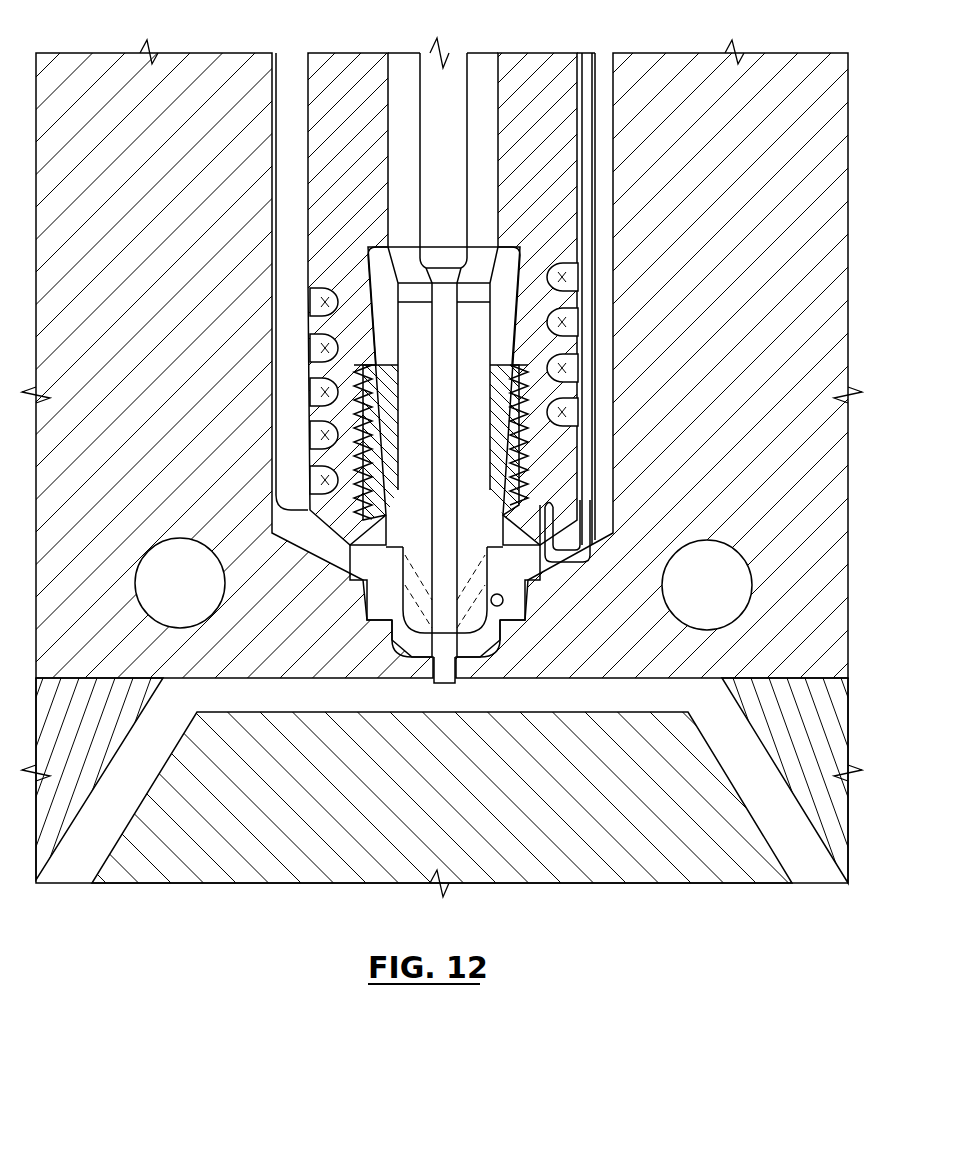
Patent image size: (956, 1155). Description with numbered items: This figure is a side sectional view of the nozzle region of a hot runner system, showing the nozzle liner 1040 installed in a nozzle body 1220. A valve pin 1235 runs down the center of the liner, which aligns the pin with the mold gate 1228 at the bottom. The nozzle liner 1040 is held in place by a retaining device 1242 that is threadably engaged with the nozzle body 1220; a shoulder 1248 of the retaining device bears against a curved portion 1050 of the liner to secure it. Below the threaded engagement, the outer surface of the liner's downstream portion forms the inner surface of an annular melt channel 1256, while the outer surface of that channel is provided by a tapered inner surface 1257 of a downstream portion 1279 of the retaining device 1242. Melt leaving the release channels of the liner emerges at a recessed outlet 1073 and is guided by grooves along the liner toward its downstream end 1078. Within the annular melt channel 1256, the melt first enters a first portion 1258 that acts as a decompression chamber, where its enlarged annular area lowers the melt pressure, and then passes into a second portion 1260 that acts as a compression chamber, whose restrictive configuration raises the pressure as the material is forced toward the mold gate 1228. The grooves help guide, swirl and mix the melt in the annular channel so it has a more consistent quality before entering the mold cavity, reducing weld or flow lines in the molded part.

The valve pin 1235 is at (455, 110).
The nozzle body 1220 is at (537, 130).
The shoulder 1248 is at (580, 345).
The curved portion 1050 is at (573, 390).
The nozzle liner 1040 is at (372, 333).
The retaining device 1242 is at (357, 462).
The first portion (decompression chamber) 1258 is at (335, 578).
The annular melt channel 1256 is at (365, 588).
The second portion (compression chamber) 1260 is at (400, 616).
The recessed outlet 1073 is at (540, 505).
The downstream portion of retaining device 1279 is at (590, 546).
The tapered inner surface 1257 is at (527, 598).
The downstream end 1078 is at (470, 637).
The mold gate 1228 is at (467, 687).